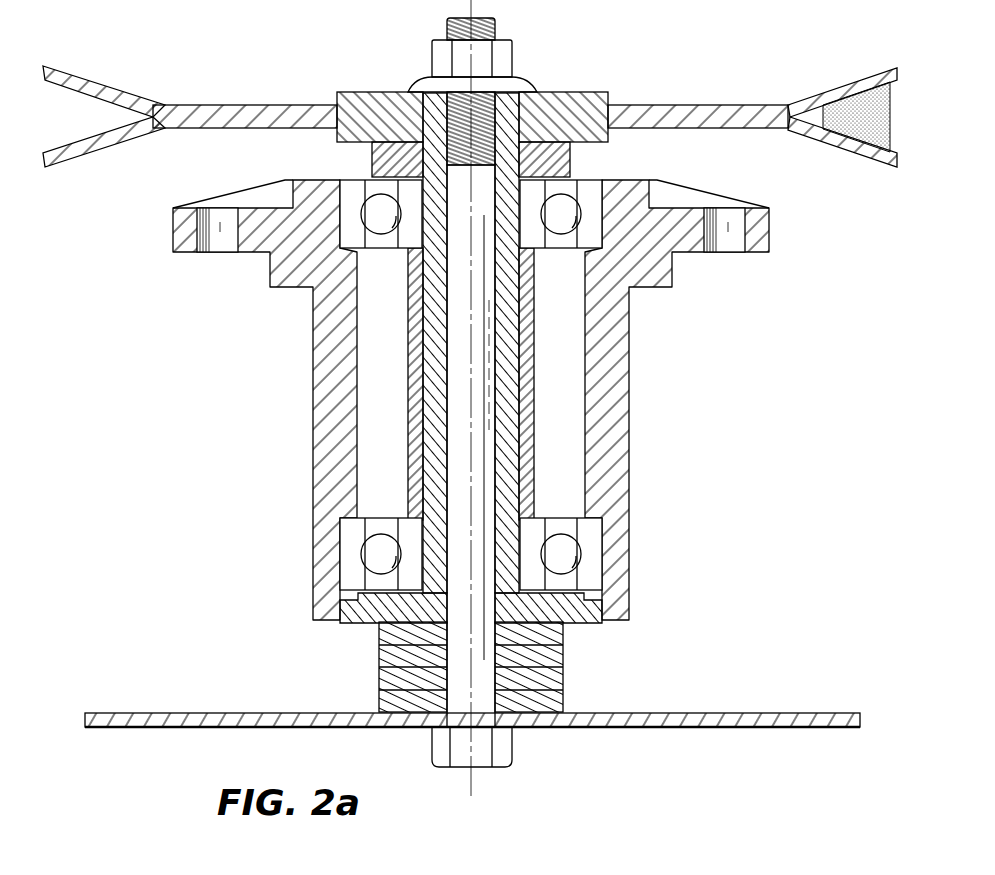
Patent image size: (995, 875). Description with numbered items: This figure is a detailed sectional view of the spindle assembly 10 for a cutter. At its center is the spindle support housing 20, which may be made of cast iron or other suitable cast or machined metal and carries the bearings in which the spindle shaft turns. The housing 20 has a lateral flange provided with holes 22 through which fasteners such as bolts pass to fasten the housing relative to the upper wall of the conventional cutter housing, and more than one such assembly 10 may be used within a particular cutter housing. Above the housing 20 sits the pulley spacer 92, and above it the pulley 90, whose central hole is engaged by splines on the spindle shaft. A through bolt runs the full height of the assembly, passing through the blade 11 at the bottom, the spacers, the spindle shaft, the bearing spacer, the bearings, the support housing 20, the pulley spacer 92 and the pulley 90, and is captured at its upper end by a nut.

The spindle assembly 10 is at (471, 400).
The blade 11 is at (214, 713).
The spindle support housing 20 is at (330, 408).
The holes 22 is at (216, 242).
The pulley 90 is at (218, 120).
The pulley spacer 92 is at (388, 165).